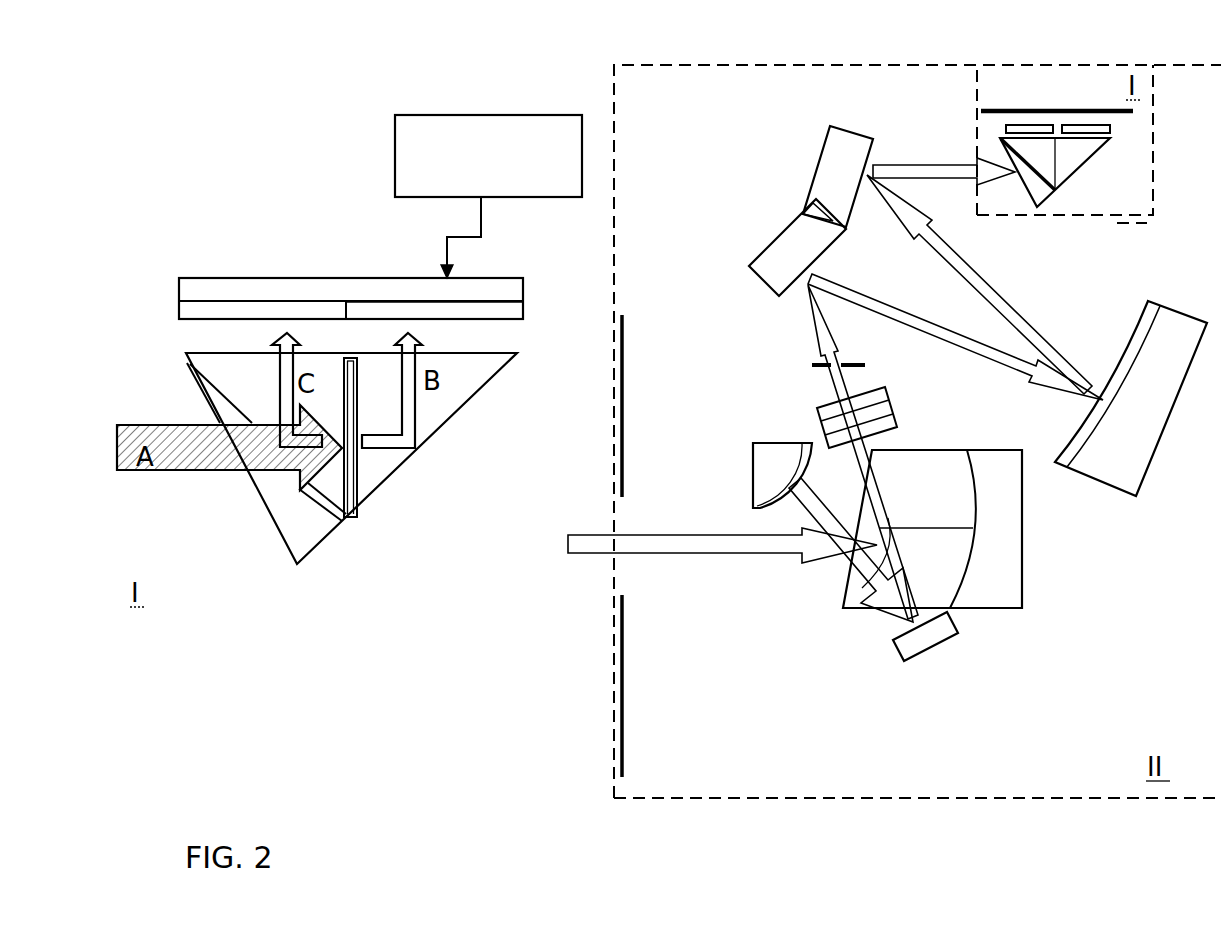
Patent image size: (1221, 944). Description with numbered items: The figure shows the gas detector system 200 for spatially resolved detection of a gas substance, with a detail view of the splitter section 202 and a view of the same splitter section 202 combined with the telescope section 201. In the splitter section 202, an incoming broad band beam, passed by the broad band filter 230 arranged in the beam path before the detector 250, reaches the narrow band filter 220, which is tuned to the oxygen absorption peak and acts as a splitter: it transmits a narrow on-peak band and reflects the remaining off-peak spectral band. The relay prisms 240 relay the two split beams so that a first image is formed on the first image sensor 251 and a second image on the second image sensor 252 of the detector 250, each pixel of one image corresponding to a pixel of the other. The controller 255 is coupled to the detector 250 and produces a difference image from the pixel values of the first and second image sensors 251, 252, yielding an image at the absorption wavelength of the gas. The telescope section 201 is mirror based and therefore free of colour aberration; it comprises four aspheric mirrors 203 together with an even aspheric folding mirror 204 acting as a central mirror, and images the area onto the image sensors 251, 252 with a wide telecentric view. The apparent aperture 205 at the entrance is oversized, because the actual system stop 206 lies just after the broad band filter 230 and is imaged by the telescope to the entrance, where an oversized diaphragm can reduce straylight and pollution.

The gas detector system 200 is at (937, 841).
The telescope section 201 is at (793, 701).
The splitter section 202 is at (1140, 211).
The aspheric mirrors 203 is at (827, 183).
The even aspheric folding mirror 204 is at (1126, 469).
The apparent aperture 205 is at (636, 583).
The system stop 206 is at (882, 370).
The narrow band filter 220 is at (358, 484).
The broad band filter 230 is at (796, 402).
The relay prisms 240 is at (229, 358).
The detector 250 is at (222, 290).
The first image sensor 251 is at (197, 310).
The second image sensor 252 is at (505, 310).
The controller 255 is at (500, 163).